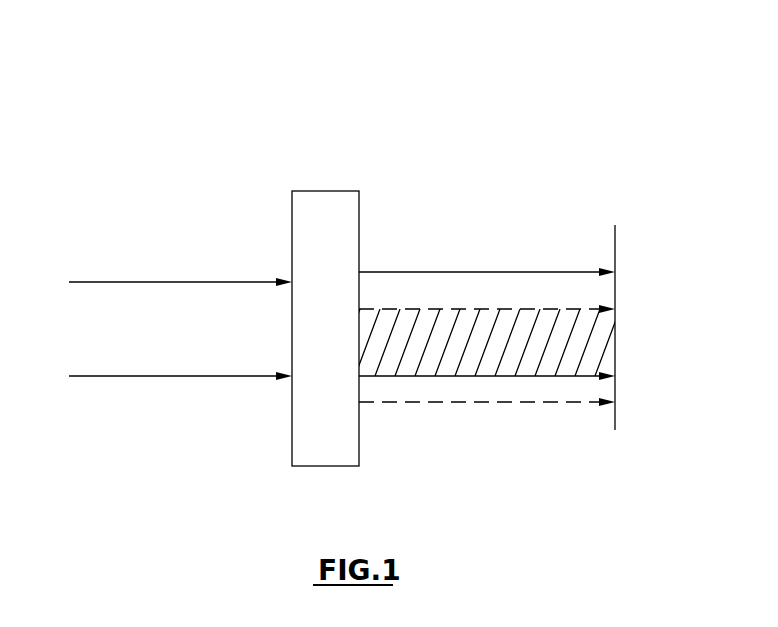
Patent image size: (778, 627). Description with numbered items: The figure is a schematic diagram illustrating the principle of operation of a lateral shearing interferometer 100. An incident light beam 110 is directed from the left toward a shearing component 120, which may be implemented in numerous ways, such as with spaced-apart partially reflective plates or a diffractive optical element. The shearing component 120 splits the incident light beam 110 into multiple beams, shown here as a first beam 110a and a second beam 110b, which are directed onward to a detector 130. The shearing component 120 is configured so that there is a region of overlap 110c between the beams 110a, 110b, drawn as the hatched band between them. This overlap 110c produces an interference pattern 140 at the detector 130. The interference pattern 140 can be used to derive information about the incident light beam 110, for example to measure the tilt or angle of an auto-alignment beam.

The lateral shearing interferometer 100 is at (150, 62).
The light beam 110 is at (136, 303).
The first split beam 110a is at (466, 272).
The second split beam 110b is at (446, 403).
The region of overlap 110c is at (510, 357).
The shearing component 120 is at (330, 191).
The detector 130 is at (615, 250).
The interference pattern 140 is at (627, 308).